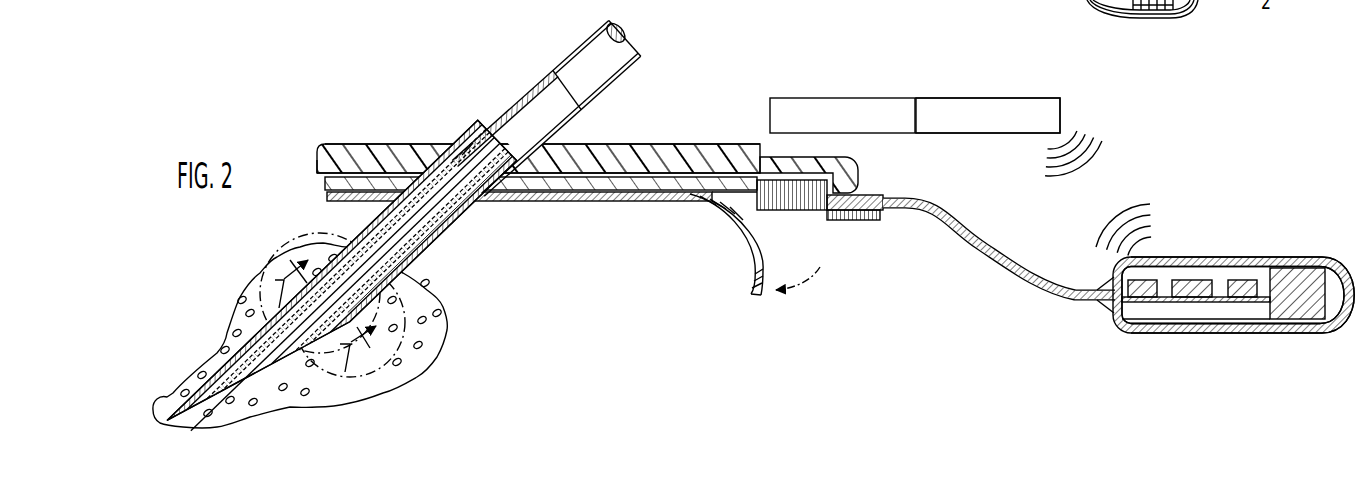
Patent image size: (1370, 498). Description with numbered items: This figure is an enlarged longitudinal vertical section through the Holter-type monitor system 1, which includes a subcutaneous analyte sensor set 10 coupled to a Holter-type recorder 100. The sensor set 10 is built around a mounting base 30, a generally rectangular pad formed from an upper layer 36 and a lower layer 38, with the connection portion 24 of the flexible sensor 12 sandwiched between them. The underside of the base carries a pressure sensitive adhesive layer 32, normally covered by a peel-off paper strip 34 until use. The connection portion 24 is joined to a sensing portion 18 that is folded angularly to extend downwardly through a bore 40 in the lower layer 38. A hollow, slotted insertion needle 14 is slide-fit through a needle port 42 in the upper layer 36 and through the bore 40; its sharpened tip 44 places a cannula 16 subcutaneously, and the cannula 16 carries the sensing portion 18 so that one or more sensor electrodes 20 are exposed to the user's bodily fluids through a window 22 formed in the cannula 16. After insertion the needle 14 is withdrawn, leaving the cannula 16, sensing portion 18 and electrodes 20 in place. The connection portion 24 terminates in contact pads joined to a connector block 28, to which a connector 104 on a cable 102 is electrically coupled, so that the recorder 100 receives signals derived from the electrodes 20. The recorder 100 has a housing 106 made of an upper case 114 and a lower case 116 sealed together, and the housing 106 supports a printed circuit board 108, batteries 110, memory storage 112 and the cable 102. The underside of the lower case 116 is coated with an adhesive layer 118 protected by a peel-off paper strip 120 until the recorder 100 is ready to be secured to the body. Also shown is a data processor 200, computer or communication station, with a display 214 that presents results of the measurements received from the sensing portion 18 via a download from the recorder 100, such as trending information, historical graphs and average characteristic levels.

The Holter-type monitor system 1 is at (923, 58).
The subcutaneous analyte sensor set 10 is at (460, 59).
The flexible sensor 12 is at (605, 145).
The insertion needle 14 is at (588, 45).
The cannula 16 is at (403, 160).
The sensing portion 18 is at (302, 365).
The sensor electrodes 20 is at (363, 312).
The window 22 is at (334, 341).
The connection portion 24 is at (703, 143).
The connector block 28 is at (793, 210).
The mounting base 30 is at (367, 134).
The adhesive layer 32 is at (740, 197).
The peel-off paper strip 34 is at (750, 237).
The upper layer 36 is at (338, 143).
The lower layer 38 is at (318, 183).
The bore 40 is at (483, 212).
The needle port 42 is at (473, 143).
The sharpened tip 44 is at (167, 403).
The Holter-type recorder 100 is at (1243, 203).
The cable 102 is at (1000, 258).
The connector 104 is at (855, 222).
The housing 106 is at (1290, 241).
The printed circuit board 108 is at (1158, 302).
The batteries 110 is at (1318, 275).
The memory storage 112 is at (1235, 302).
The upper case 114 is at (1168, 258).
The lower case 116 is at (1328, 333).
The adhesive layer 118 is at (1268, 334).
The peel-off paper strip 120 is at (1237, 335).
The data processor 200 is at (990, 97).
The display 214 is at (850, 97).